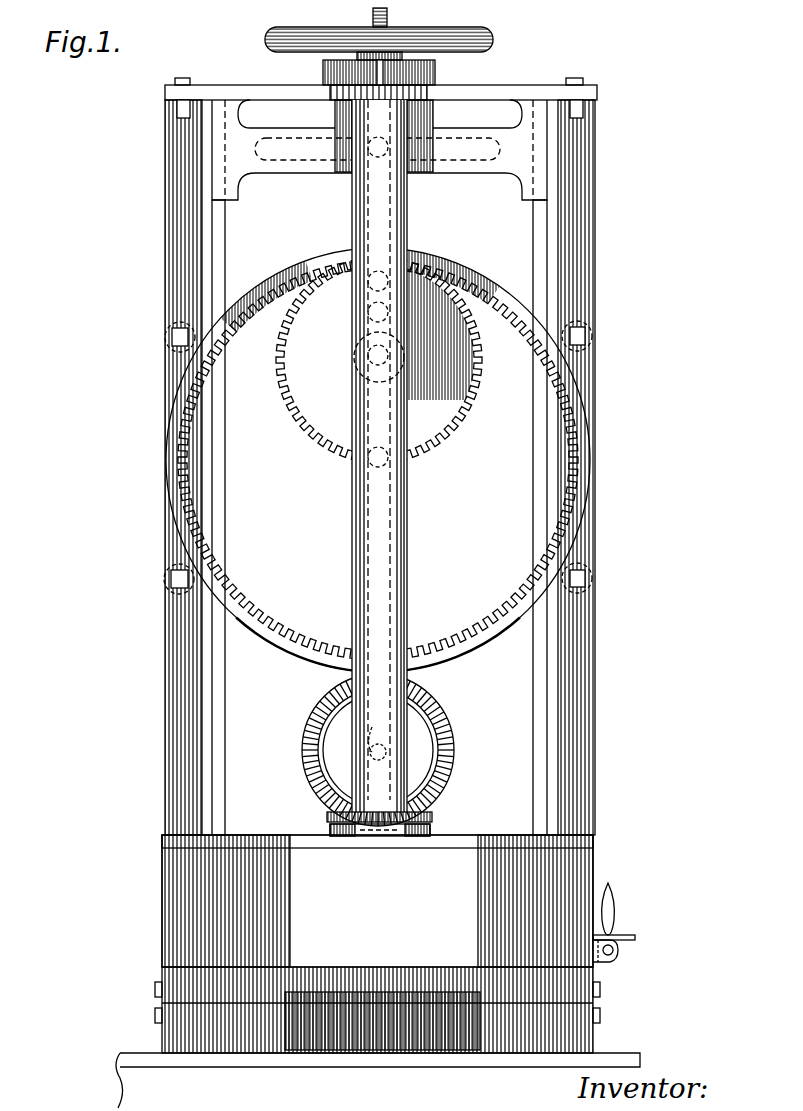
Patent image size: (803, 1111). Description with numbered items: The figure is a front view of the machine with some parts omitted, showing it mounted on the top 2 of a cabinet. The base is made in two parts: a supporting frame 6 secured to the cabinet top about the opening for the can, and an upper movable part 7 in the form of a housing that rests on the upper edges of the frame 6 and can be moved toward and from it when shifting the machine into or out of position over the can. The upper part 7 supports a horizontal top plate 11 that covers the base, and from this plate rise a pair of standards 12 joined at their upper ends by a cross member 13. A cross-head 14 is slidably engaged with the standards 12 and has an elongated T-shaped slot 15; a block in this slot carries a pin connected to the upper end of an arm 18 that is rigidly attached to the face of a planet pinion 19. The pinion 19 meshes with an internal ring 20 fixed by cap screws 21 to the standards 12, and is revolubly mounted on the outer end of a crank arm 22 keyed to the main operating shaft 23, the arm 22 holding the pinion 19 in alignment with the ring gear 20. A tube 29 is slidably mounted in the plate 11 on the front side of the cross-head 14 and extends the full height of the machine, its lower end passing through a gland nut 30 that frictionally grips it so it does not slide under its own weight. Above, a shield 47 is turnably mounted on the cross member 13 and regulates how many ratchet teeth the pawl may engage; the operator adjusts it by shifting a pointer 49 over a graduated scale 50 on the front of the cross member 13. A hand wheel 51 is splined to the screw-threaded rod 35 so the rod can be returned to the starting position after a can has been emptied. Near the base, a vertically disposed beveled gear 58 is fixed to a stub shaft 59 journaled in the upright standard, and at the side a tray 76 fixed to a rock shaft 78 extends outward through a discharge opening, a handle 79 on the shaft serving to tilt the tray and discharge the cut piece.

The top of the cabinet 2 is at (207, 1060).
The supporting frame 6 is at (178, 1030).
The upper movable part 7 is at (178, 903).
The top plate 11 is at (252, 843).
The standards 12 is at (185, 168).
The cross member 13 is at (529, 93).
The cross-head 14 is at (515, 135).
The T-shaped slot 15 is at (480, 160).
The arm 18 is at (393, 222).
The planet pinion 19 is at (330, 356).
The internal ring 20 is at (311, 256).
The cap screws 21 is at (172, 338).
The crank arm 22 is at (362, 394).
The main operating shaft 23 is at (374, 460).
The tube 29 is at (355, 201).
The gland nut 30 is at (433, 816).
The screw-threaded rod 35 is at (388, 19).
The shield 47 is at (325, 71).
The pointer 49 is at (380, 73).
The scale 50 is at (425, 95).
The hand wheel 51 is at (485, 40).
The beveled gear 58 is at (322, 718).
The stub shaft 59 is at (380, 729).
The tray 76 is at (635, 938).
The rock shaft 78 is at (616, 955).
The handle 79 is at (612, 902).